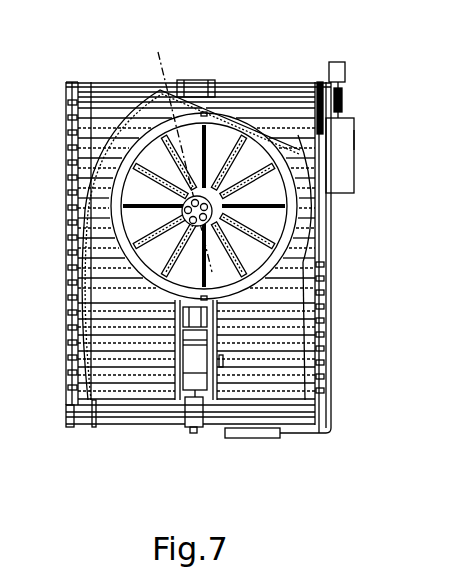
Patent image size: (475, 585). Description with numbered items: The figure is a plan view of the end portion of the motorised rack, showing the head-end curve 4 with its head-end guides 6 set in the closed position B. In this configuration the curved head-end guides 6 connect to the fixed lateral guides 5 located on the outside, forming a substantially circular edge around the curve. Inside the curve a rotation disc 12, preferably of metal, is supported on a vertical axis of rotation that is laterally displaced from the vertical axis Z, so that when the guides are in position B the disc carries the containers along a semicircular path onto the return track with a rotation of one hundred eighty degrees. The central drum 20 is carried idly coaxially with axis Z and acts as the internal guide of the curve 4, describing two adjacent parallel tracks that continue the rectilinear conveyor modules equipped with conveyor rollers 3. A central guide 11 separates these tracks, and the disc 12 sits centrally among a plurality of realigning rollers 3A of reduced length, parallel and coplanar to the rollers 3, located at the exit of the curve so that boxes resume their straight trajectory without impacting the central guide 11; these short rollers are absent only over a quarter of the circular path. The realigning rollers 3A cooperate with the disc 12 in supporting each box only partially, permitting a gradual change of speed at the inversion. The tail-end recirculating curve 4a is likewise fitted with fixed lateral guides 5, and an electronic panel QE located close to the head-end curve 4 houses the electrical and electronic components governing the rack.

The conveyor rollers 3 is at (138, 88).
The realigning rollers 3A is at (97, 182).
The head-end curve 4 is at (343, 280).
The tail-end/recirculating curve 4a is at (103, 80).
The fixed lateral guides 5 is at (87, 330).
The head-end guides 6 is at (233, 93).
The central guide 11 is at (180, 412).
The rotation disc 12 is at (283, 247).
The central drum 20 is at (80, 167).
The closed position B is at (267, 67).
The vertical axis Z is at (184, 152).
The electronic panel QE is at (355, 122).